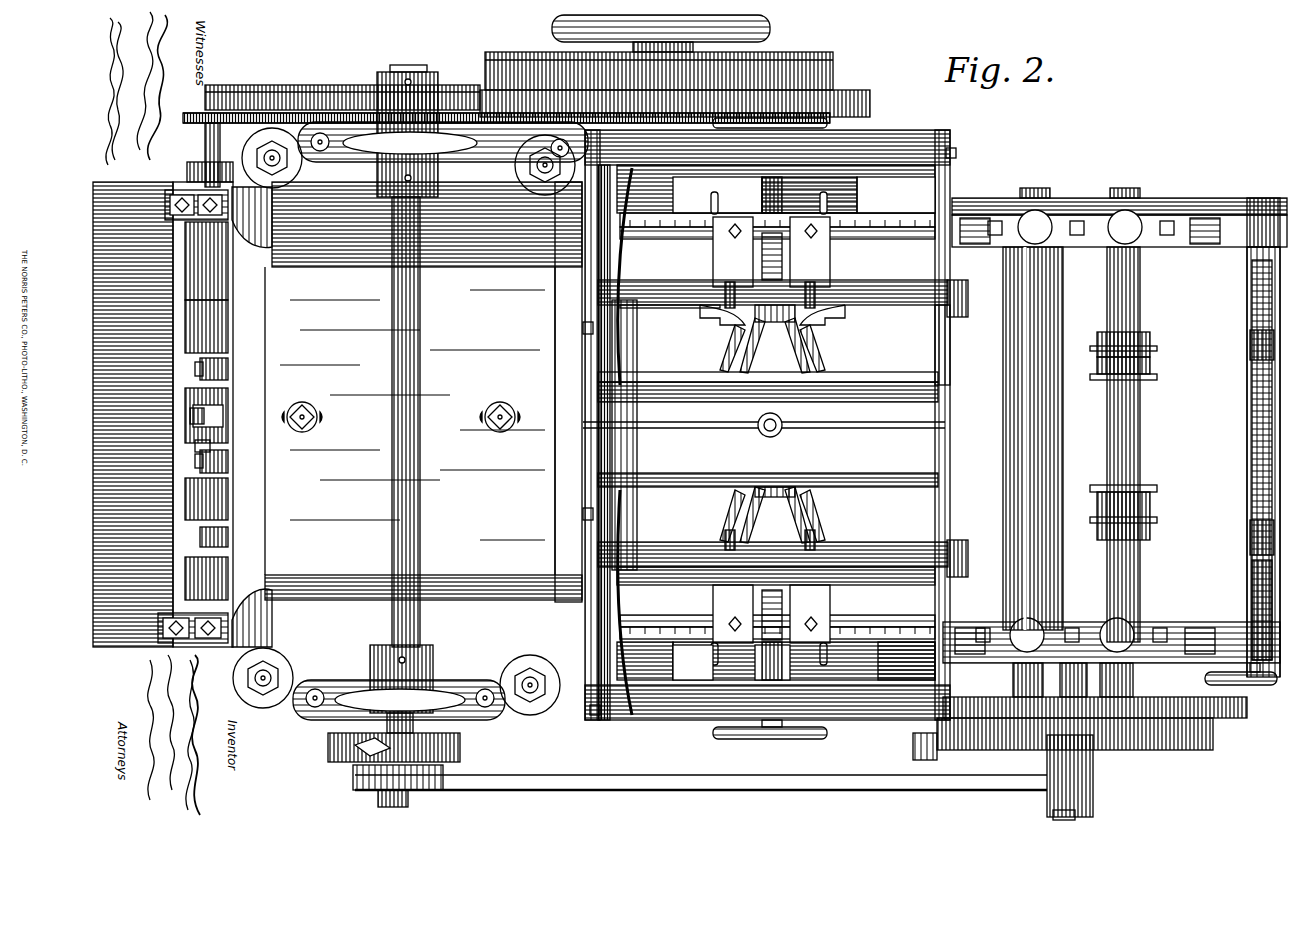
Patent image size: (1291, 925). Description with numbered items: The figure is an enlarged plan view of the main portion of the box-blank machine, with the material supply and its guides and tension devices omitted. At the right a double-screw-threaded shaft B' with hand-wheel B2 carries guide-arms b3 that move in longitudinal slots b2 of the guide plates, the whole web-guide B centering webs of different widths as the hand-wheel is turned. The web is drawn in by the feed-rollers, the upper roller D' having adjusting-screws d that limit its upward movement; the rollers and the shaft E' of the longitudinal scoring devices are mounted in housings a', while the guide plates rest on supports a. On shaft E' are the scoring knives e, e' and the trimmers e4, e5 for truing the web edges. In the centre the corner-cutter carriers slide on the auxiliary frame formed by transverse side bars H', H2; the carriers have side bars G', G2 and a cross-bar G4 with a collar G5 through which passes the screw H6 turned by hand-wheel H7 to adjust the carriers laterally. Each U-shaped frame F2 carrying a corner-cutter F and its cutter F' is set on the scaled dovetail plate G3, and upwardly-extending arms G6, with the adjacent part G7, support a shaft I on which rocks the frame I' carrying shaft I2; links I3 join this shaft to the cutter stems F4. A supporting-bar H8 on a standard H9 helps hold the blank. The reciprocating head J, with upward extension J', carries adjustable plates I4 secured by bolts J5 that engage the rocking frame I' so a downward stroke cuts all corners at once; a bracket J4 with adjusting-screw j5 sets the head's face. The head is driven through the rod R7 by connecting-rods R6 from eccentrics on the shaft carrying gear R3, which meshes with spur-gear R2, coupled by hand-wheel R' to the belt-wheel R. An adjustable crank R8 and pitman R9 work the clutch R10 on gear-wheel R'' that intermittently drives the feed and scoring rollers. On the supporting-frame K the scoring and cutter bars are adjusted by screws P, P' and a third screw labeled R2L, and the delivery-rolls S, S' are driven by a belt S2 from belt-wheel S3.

The hand-wheel R' is at (676, 33).
The belt-wheel R is at (672, 71).
The gear R3 is at (342, 86).
The spur-gear R2 is at (765, 102).
The belt-wheel S3 is at (618, 110).
The hand-wheel H7 is at (827, 124).
The connecting-rod R6 is at (404, 399).
The adjustable crank R8 is at (460, 748).
The pitman R9 is at (752, 788).
The belt S2 is at (244, 130).
The supporting-frame K is at (262, 628).
The delivery-roll S is at (223, 263).
The delivery-roll S' is at (225, 326).
The adjusting-screw P is at (228, 368).
The bracket J4 is at (222, 418).
The adjusting-screw j5 is at (185, 440).
The adjusting-screw P' is at (229, 460).
The pinion (left) R2L is at (228, 535).
The reciprocating head J is at (423, 391).
The rod R7 is at (410, 420).
The securing bolt J5 is at (306, 413).
The upward extension J' is at (568, 392).
The adjustable plate I4 is at (582, 333).
The rocking frame I' is at (750, 425).
The shaft I is at (764, 437).
The upwardly-extending arm G6 is at (689, 426).
The guide G7 is at (857, 189).
The dovetail plate G3 is at (690, 228).
The cross-bar G4 is at (896, 228).
The U-shaped frame F2 is at (770, 441).
The screw H6 is at (782, 598).
The side bar G2 is at (620, 350).
The shaft I2 is at (688, 312).
The link I3 is at (828, 322).
The corner-cutter stem F4 is at (722, 352).
The cutter F' is at (768, 433).
The corner-cutter F is at (759, 424).
The transverse side bar H2 is at (640, 398).
The transverse side bar H' is at (768, 436).
The supporting-bar H8 is at (715, 423).
The standard H9 is at (782, 433).
The side bar G' is at (952, 345).
The collar G5 is at (900, 661).
The housing a' is at (1115, 428).
The support a is at (1263, 211).
The adjusting-screw d is at (1076, 431).
The feed-roller D' is at (1045, 438).
The shaft E' is at (1132, 444).
The trimmer e5 is at (1150, 345).
The scoring knife e' is at (1132, 370).
The scoring knife e is at (1126, 509).
The trimmer e4 is at (1145, 530).
The frame B is at (1249, 462).
The double-screw-threaded shaft B' is at (1245, 460).
The guide-arm b3 is at (1250, 342).
The longitudinal slot b2 is at (1252, 578).
The hand-wheel B2 is at (1268, 686).
The gear-wheel R'' is at (1098, 724).
The clutch R10 is at (1100, 758).